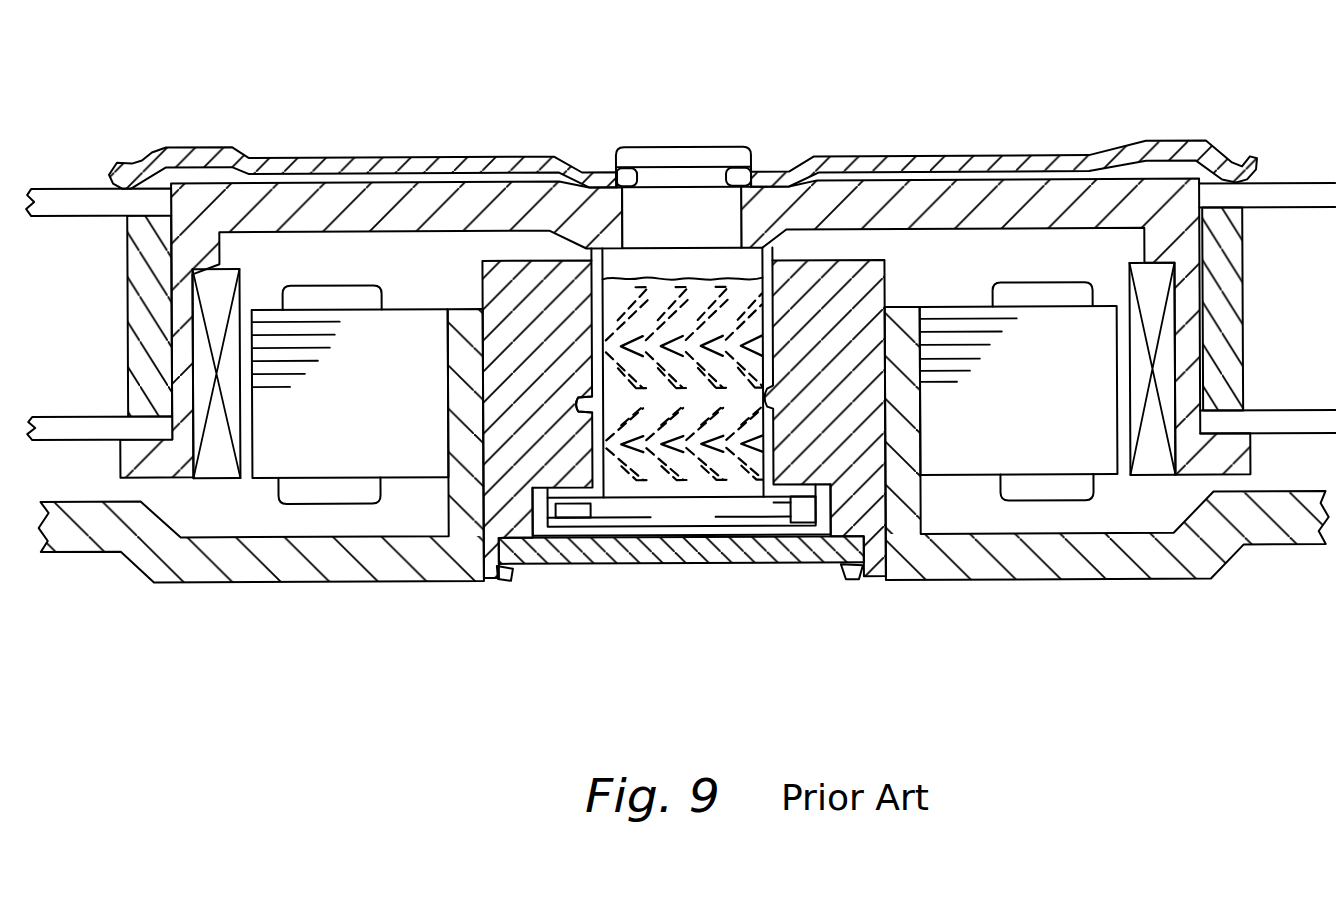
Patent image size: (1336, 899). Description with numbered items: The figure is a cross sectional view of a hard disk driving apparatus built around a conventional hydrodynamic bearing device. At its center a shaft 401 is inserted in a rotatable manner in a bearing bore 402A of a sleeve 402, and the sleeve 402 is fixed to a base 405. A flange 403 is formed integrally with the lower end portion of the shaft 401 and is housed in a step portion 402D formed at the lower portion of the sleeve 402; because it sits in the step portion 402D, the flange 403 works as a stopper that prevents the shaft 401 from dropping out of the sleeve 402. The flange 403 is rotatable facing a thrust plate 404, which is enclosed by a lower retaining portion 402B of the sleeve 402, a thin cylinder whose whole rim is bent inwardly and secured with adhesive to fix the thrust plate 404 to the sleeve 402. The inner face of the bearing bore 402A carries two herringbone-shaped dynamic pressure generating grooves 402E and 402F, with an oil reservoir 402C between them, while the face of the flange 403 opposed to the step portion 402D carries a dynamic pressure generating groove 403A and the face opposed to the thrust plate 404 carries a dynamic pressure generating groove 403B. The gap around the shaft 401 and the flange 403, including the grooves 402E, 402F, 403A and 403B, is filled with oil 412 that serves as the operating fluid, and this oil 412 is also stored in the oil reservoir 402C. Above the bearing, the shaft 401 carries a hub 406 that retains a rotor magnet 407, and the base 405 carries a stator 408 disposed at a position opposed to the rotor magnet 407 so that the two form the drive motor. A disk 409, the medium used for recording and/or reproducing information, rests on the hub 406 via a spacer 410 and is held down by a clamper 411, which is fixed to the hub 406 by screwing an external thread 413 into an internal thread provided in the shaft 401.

The shaft 401 is at (665, 203).
The sleeve 402 is at (528, 319).
The bearing bore 402A is at (762, 425).
The lower retaining portion 402B is at (507, 580).
The oil reservoir 402C is at (583, 404).
The step portion 402D is at (568, 520).
The dynamic pressure generating groove 402E is at (712, 290).
The dynamic pressure generating groove 402F is at (655, 460).
The flange 403 is at (613, 500).
The dynamic pressure generating groove 403A is at (783, 527).
The dynamic pressure generating groove 403B is at (760, 523).
The thrust plate 404 is at (627, 510).
The base 405 is at (300, 565).
The hub 406 is at (970, 198).
The rotor magnet 407 is at (213, 305).
The stator 408 is at (287, 455).
The disk 409 is at (97, 204).
The spacer 410 is at (143, 257).
The clamper 411 is at (210, 155).
The oil 412 is at (615, 277).
The external thread 413 is at (693, 157).